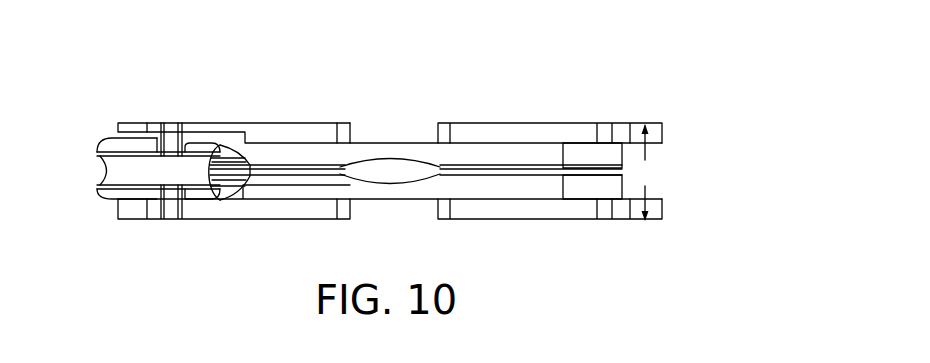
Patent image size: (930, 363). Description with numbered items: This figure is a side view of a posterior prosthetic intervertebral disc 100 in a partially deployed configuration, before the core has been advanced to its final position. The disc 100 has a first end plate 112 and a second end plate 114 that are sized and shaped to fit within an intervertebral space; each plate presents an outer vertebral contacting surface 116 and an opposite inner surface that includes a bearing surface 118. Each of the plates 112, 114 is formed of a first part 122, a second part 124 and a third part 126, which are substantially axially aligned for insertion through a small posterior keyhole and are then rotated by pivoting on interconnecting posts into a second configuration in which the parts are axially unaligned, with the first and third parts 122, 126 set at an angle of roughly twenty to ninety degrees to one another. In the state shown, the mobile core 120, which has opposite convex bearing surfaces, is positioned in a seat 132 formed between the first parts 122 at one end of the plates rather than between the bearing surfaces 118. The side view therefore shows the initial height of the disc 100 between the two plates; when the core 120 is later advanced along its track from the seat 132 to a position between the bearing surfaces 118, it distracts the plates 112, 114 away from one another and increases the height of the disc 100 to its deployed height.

The posterior prosthetic intervertebral disc 100 is at (669, 76).
The first end plate 112 is at (674, 151).
The second end plate 114 is at (674, 194).
The vertebral contacting surface 116 is at (523, 123).
The bearing surface 118 is at (411, 171).
The mobile core 120 is at (122, 178).
The first part 122 is at (283, 207).
The second part 124 is at (460, 187).
The third part 126 is at (583, 203).
The seat 132 is at (222, 193).